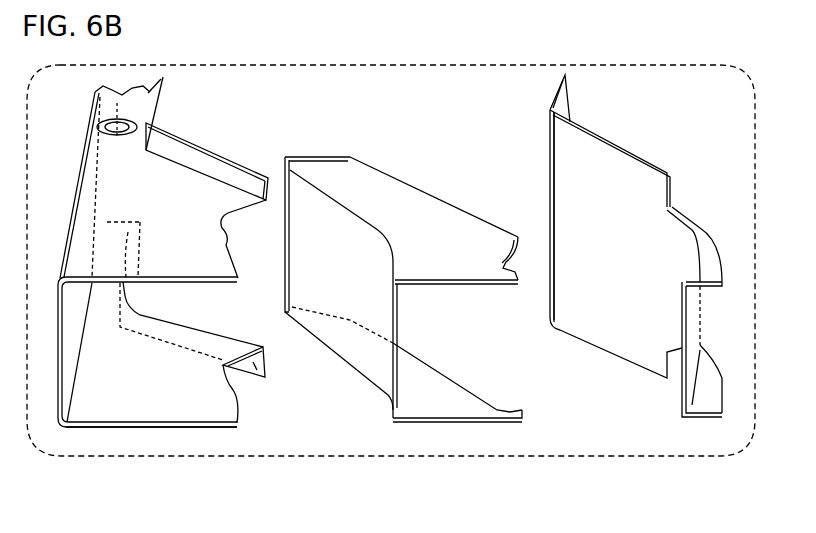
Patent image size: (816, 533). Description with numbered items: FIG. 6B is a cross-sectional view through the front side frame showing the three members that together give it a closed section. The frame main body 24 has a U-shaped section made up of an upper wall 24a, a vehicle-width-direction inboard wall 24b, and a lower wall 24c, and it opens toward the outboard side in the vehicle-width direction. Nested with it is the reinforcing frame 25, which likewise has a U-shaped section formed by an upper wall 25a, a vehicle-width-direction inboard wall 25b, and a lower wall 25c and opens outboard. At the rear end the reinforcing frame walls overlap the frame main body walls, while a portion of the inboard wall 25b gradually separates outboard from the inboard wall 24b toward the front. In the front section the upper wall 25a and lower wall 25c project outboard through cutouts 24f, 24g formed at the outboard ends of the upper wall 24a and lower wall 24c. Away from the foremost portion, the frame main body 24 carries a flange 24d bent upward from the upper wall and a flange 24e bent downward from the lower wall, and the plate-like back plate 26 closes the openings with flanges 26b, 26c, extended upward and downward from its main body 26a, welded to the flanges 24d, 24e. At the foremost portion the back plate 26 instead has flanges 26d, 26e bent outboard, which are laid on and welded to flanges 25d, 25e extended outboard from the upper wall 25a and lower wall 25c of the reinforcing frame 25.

The frame main body 24 is at (186, 135).
The upper wall 24a is at (116, 172).
The vehicle-width-direction inboard wall 24b is at (73, 318).
The lower wall 24c is at (155, 413).
The flange 24d is at (218, 168).
The flange 24e is at (252, 371).
The cutout 24f is at (225, 210).
The cutout 24g is at (223, 380).
The reinforcing frame 25 is at (428, 192).
The upper wall 25a is at (395, 192).
The vehicle-width-direction inboard wall 25b is at (300, 277).
The lower wall 25c is at (415, 380).
The flange 25d is at (510, 247).
The flange 25e is at (465, 395).
The back plate 26 is at (640, 152).
The main body 26a is at (577, 195).
The flange 26b is at (605, 155).
The flange 26c is at (623, 355).
The flange 26d is at (712, 245).
The flange 26e is at (705, 410).